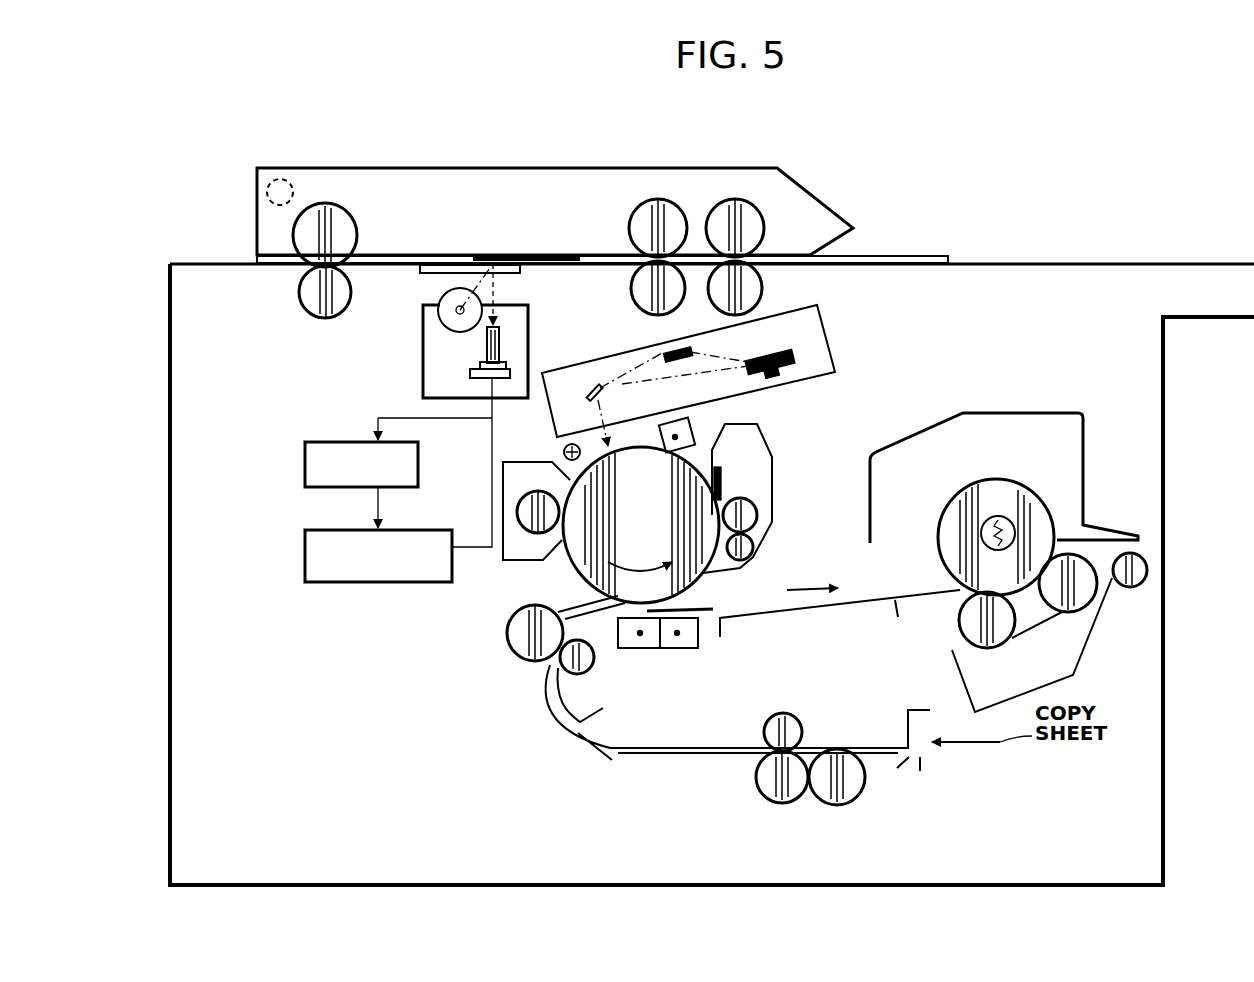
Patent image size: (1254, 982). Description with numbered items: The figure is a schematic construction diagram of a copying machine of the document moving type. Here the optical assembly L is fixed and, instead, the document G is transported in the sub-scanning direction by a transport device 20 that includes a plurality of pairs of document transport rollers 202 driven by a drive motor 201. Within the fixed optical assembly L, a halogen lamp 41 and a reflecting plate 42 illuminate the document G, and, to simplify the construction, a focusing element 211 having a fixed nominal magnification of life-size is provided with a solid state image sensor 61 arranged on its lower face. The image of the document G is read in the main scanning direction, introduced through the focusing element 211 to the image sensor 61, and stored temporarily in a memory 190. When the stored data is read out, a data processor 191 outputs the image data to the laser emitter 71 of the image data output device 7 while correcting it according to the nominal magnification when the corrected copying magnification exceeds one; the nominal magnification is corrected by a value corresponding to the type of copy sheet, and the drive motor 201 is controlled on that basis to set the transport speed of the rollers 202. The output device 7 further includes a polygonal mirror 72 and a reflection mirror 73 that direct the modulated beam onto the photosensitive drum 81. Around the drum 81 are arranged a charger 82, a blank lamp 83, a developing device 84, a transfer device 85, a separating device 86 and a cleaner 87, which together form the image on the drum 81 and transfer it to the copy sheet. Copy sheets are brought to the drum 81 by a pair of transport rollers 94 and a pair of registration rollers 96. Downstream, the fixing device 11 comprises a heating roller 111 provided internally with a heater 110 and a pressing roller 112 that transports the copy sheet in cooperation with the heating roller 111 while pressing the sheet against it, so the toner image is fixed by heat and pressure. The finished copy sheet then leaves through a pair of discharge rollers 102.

The transport device 20 is at (345, 168).
The drive motor 201 is at (272, 180).
The document transport rollers 202 is at (345, 228).
The document G is at (890, 256).
The halogen lamp 41 is at (428, 330).
The reflecting plate 42 is at (438, 305).
The focusing element 211 is at (500, 335).
The solid state image sensor 61 is at (480, 368).
The optical assembly L is at (418, 375).
The memory 190 is at (418, 463).
The data processor 191 is at (362, 582).
The image data output device 7 is at (835, 352).
The laser emitter 71 is at (665, 358).
The polygonal mirror 72 is at (772, 360).
The reflection mirror 73 is at (592, 388).
The photosensitive drum 81 is at (703, 573).
The charger 82 is at (692, 421).
The blank lamp 83 is at (565, 448).
The developing device 84 is at (520, 548).
The cleaner 87 is at (765, 478).
The transfer device 85 is at (640, 650).
The separating device 86 is at (692, 650).
The registration rollers 96 is at (517, 660).
The transport rollers 94 is at (808, 802).
The fixing device 11 is at (1033, 472).
The heating roller 111 is at (980, 490).
The heater 110 is at (1005, 533).
The pressing roller 112 is at (965, 620).
The discharge rollers 102 is at (1130, 590).